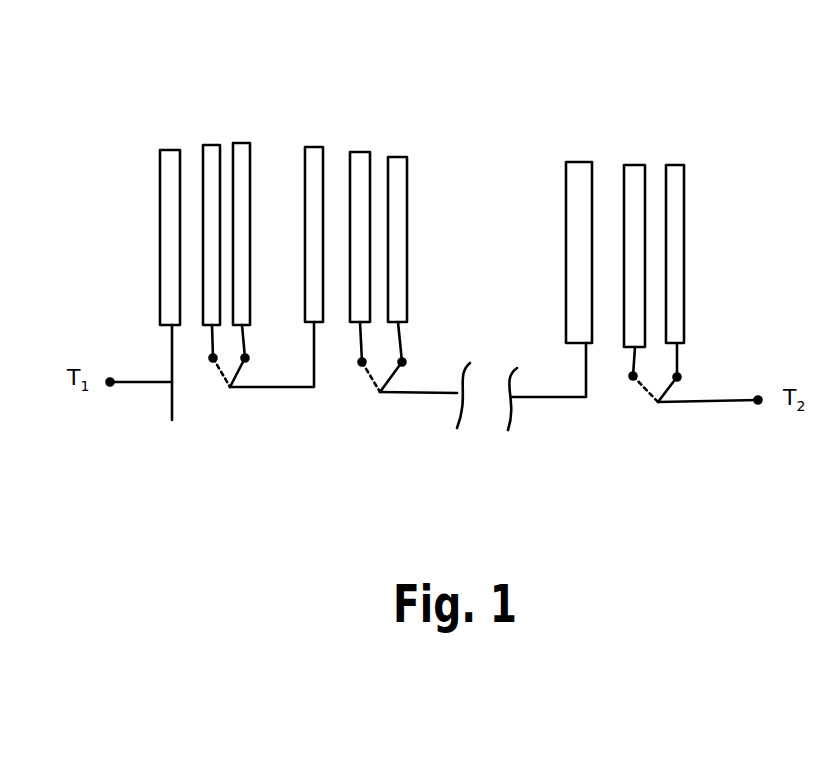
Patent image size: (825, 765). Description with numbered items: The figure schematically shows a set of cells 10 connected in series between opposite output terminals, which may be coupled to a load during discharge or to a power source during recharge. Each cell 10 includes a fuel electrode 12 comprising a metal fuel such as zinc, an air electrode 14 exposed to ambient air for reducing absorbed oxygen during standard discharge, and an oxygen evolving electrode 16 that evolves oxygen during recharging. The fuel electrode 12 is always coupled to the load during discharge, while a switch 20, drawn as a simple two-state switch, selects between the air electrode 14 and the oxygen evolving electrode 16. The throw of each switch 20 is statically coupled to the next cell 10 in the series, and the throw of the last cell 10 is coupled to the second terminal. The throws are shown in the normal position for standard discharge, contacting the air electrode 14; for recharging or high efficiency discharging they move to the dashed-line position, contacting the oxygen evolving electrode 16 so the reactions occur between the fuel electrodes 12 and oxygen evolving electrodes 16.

The cell 10 is at (160, 99).
The fuel electrode 12 is at (160, 170).
The air electrode 14 is at (249, 156).
The oxygen evolving electrode 16 is at (210, 150).
The switch 20 is at (236, 408).